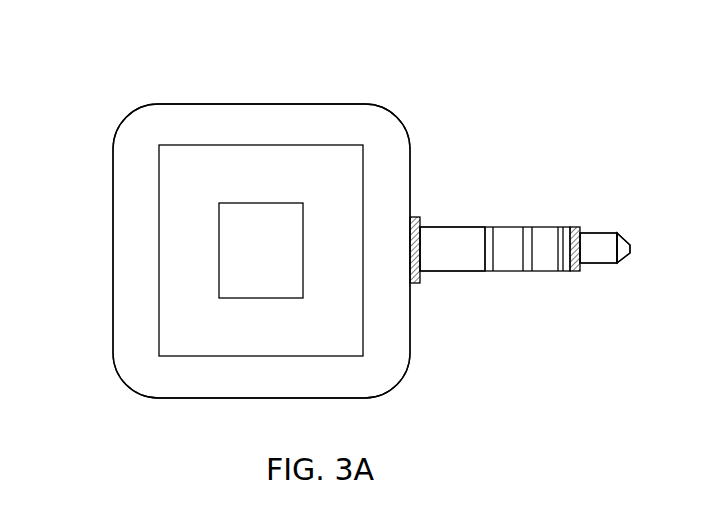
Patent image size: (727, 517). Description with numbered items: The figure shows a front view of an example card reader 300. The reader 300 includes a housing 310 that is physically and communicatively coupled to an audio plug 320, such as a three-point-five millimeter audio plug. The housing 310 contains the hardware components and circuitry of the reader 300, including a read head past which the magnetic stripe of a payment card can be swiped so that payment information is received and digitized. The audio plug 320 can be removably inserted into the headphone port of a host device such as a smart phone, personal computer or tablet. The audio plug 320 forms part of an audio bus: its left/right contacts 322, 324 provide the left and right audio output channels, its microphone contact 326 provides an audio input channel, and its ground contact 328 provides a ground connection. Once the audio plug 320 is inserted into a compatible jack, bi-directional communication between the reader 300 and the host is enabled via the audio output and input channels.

The reader 300 is at (118, 76).
The housing 310 is at (143, 395).
The audio plug 320 is at (423, 165).
The left/right contact 322 is at (612, 253).
The left/right contact 324 is at (547, 240).
The microphone contact 326 is at (453, 255).
The ground contact 328 is at (510, 265).